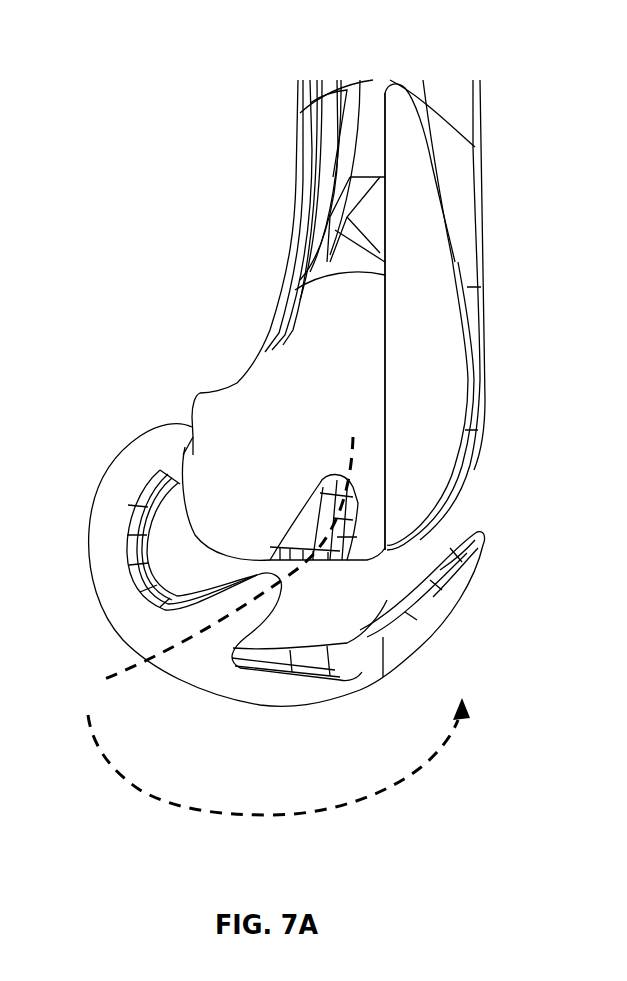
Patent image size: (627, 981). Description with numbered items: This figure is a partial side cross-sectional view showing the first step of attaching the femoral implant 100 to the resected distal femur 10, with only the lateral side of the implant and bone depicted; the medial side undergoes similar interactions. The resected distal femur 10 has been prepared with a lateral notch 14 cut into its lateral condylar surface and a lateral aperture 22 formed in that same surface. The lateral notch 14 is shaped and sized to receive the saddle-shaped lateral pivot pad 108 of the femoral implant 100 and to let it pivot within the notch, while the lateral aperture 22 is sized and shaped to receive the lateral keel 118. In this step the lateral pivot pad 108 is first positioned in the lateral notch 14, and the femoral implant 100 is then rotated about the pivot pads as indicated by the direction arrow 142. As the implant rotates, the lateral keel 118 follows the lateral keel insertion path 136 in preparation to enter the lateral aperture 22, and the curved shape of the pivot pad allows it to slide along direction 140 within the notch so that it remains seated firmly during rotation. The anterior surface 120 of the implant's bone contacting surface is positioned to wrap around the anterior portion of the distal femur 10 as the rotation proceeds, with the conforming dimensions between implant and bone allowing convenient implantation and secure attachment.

The resected distal femur 10 is at (255, 78).
The lateral notch 14 is at (192, 432).
The lateral aperture 22 is at (355, 491).
The femoral implant 100 is at (237, 720).
The lateral pivot pad 108 is at (183, 455).
The lateral keel 118 is at (270, 611).
The anterior surface 120 is at (414, 580).
The lateral keel insertion path 136 is at (173, 652).
The direction 140 is at (209, 400).
The direction arrow 142 is at (420, 768).